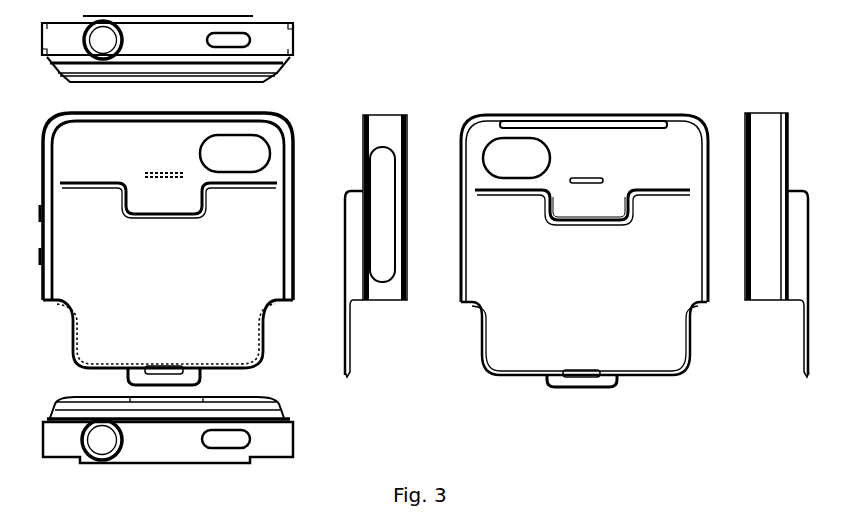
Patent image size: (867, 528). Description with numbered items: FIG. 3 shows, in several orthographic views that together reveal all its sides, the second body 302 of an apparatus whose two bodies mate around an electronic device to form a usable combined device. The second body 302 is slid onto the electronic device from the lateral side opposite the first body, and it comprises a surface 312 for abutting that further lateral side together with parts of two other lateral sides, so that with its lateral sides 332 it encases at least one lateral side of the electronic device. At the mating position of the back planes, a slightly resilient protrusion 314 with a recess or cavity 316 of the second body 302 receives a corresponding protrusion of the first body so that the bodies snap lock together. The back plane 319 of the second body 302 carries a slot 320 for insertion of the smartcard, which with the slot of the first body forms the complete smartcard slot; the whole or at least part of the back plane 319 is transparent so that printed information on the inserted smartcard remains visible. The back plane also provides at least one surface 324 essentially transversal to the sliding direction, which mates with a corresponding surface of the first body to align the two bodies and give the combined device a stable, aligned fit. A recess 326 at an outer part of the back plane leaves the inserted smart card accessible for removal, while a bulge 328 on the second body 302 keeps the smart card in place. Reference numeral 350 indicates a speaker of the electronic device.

The second body 302 is at (120, 152).
The surface 312 is at (282, 118).
The protrusion 314 is at (543, 376).
The recess or cavity 316 is at (607, 380).
The back plane 319 is at (505, 266).
The slot 320 is at (637, 190).
The surface essentially transversal to the sliding direction 324 is at (627, 207).
The recess 326 is at (560, 202).
The bulge 328 is at (603, 182).
The lateral sides 332 is at (53, 252).
The speaker 350 is at (107, 38).